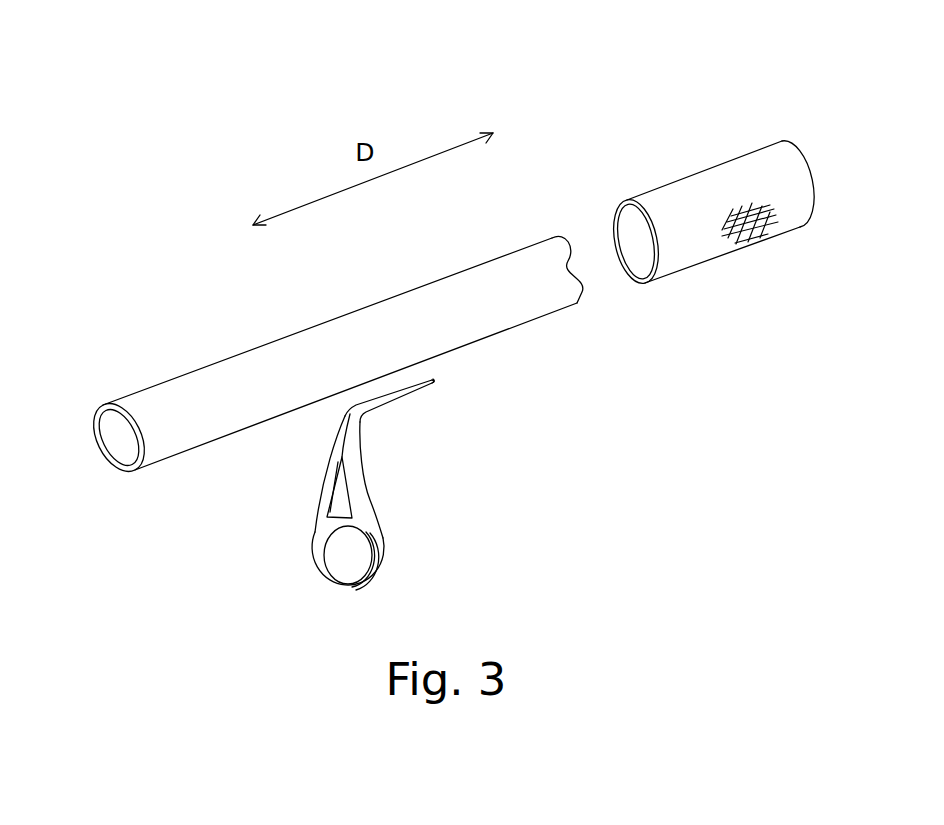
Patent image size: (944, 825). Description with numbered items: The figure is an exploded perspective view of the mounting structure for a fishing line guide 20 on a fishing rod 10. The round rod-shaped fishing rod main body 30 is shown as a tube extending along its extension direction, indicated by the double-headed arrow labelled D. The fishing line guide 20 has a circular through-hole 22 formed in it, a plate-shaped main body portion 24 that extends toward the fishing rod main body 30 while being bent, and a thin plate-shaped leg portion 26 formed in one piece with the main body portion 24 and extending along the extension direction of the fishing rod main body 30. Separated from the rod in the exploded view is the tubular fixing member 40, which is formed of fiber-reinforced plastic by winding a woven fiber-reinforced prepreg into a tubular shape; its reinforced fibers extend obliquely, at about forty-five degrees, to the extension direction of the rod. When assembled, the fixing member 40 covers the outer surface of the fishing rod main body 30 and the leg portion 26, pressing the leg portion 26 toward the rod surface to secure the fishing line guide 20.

The fishing rod 10 is at (638, 247).
The fishing line guide 20 is at (377, 499).
The circular through-hole 22 is at (343, 565).
The main body portion 24 is at (352, 483).
The leg portion 26 is at (393, 398).
The fishing rod main body 30 is at (505, 270).
The fixing member 40 is at (685, 200).